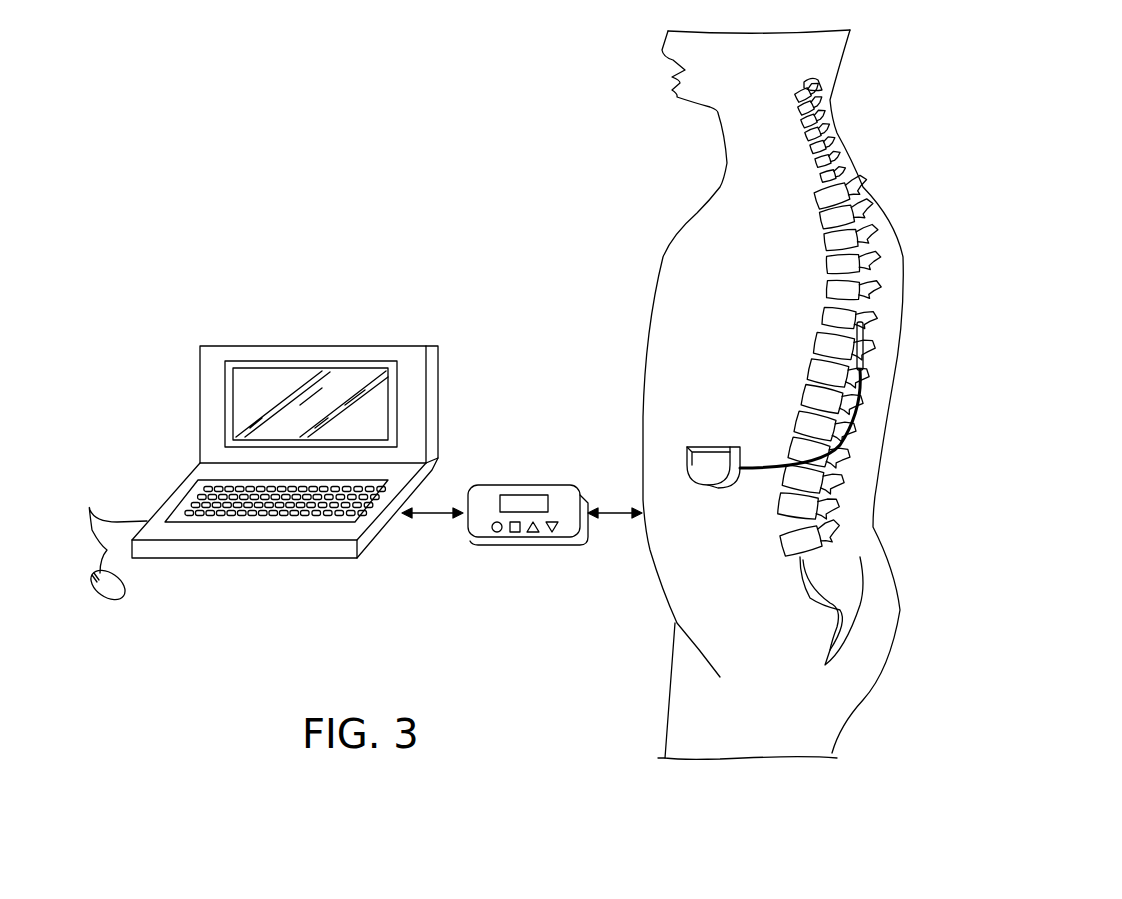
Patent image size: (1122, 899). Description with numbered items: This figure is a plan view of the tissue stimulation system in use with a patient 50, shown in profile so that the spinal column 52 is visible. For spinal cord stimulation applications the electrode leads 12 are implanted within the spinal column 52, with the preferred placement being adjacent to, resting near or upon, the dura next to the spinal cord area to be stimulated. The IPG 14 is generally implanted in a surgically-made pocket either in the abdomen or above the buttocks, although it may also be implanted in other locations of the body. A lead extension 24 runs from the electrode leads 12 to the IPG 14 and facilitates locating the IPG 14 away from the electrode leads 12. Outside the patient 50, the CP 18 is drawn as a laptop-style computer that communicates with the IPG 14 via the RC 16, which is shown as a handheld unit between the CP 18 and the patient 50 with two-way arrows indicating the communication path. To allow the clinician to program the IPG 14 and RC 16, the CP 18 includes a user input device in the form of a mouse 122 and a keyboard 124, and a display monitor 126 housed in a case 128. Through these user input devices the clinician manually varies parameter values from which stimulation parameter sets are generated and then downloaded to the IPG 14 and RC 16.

The electrode leads 12 is at (870, 347).
The IPG 14 is at (712, 473).
The RC 16 is at (548, 465).
The CP 18 is at (297, 339).
The lead extension 24 is at (867, 423).
The patient 50 is at (657, 267).
The spinal column 52 is at (823, 323).
The mouse 122 is at (93, 597).
The keyboard 124 is at (243, 515).
The display monitor 126 is at (395, 382).
The case 128 is at (187, 485).